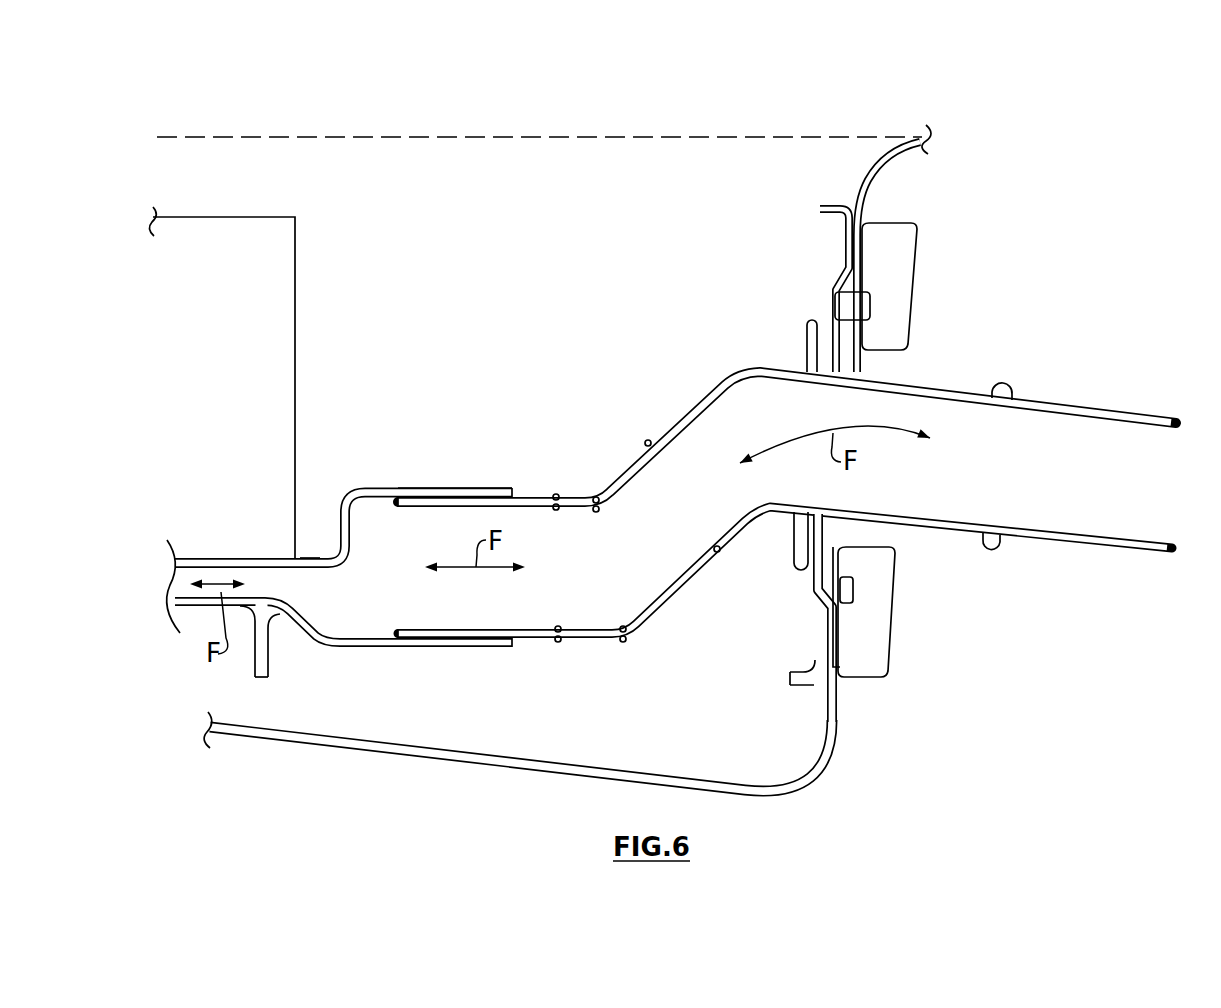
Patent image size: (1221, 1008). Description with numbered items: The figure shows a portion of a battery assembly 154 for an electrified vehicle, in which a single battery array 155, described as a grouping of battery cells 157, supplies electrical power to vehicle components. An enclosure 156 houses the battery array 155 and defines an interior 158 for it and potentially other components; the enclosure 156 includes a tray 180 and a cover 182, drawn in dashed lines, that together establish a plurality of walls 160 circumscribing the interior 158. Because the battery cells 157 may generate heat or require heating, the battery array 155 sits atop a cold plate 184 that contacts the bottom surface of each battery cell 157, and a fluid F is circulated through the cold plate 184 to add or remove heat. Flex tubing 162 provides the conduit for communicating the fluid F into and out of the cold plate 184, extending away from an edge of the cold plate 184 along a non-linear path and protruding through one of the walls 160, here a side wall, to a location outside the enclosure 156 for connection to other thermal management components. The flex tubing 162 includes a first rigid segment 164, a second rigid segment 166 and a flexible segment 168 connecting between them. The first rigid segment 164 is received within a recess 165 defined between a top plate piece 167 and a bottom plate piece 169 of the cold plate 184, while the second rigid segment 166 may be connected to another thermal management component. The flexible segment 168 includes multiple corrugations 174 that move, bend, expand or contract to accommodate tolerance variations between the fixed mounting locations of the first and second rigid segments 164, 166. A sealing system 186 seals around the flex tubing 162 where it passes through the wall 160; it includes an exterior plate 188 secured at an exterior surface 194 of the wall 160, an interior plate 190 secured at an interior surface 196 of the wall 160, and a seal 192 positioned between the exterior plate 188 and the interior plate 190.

The battery assembly 154 is at (431, 119).
The battery array 155 is at (223, 206).
The enclosure 156 is at (359, 762).
The battery cells 157 is at (210, 365).
The interior 158 is at (458, 375).
The walls 160 is at (866, 197).
The flex tubing 162 is at (691, 380).
The first rigid segment 164 is at (484, 488).
The recess 165 is at (410, 565).
The second rigid segment 166 is at (1036, 406).
The top plate piece 167 is at (379, 490).
The flexible segment 168 is at (668, 597).
The bottom plate piece 169 is at (351, 637).
The corrugations 174 is at (643, 440).
The tray 180 is at (487, 755).
The cover 182 is at (478, 137).
The cold plate 184 is at (311, 547).
The sealing system 186 is at (843, 192).
The exterior plate 188 is at (903, 245).
The interior plate 190 is at (845, 268).
The seal 192 is at (843, 328).
The exterior surface 194 is at (837, 712).
The interior surface 196 is at (826, 728).